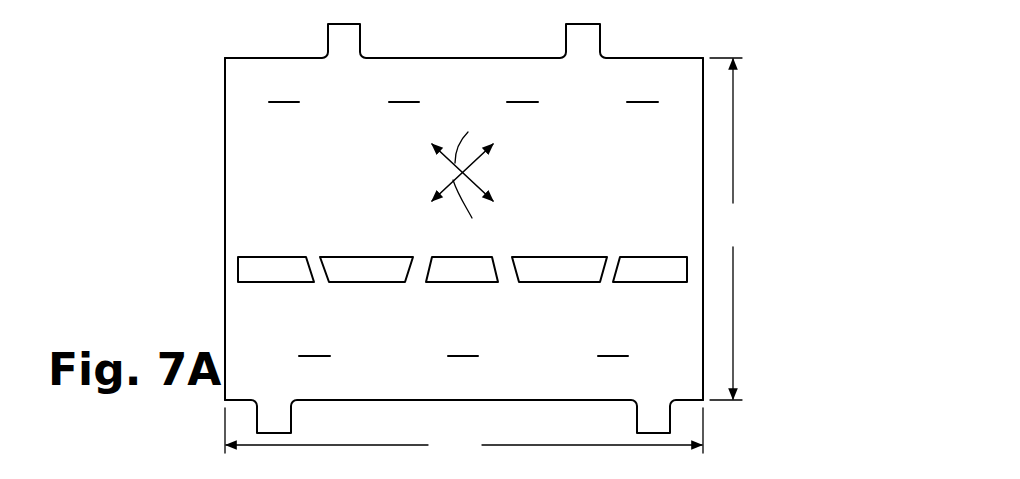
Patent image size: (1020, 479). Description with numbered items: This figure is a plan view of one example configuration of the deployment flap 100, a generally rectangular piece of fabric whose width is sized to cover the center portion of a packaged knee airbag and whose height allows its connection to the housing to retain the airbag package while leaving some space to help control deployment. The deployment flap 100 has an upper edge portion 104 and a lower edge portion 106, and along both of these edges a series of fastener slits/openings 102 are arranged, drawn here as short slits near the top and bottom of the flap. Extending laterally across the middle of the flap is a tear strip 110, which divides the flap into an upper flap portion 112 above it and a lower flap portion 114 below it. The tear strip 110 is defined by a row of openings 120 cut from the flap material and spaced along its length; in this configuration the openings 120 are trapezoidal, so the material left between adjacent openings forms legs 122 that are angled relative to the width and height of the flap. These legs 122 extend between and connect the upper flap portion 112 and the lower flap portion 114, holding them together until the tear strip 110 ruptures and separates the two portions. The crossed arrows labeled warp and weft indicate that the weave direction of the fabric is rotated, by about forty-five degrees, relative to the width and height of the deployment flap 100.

The deployment flap 100 is at (148, 168).
The fastener slits/openings 102 is at (405, 103).
The upper edge portion 104 is at (448, 78).
The lower edge portion 106 is at (448, 380).
The tear strip 110 is at (280, 238).
The upper flap portion 112 is at (252, 166).
The lower flap portion 114 is at (252, 348).
The openings 120 is at (262, 270).
The legs 122 is at (420, 270).